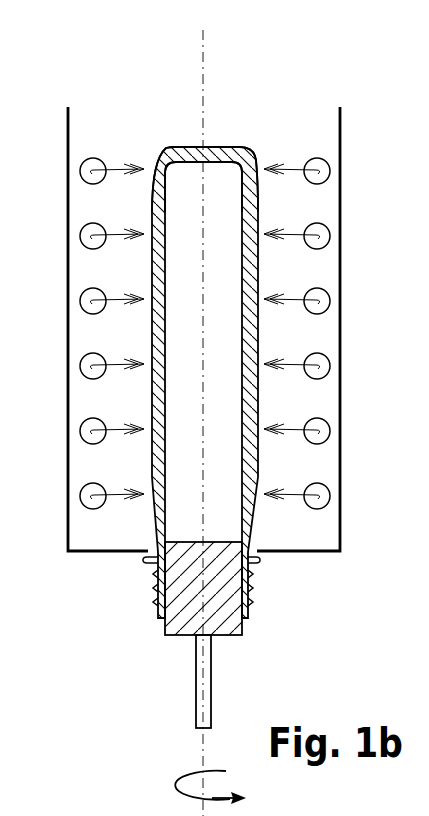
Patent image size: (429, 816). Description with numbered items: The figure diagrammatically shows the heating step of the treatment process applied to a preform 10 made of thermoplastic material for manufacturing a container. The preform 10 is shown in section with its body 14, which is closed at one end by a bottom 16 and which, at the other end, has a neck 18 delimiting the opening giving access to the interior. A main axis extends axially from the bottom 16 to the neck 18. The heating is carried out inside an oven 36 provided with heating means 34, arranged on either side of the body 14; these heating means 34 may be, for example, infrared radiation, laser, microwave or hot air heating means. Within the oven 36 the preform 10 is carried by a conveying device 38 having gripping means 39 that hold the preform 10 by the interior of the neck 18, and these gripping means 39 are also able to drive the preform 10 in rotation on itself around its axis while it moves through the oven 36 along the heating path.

The preform 10 is at (164, 139).
The body 14 is at (157, 329).
The bottom 16 is at (241, 147).
The neck 18 is at (248, 578).
The heating means 34 is at (317, 362).
The oven 36 is at (224, 100).
The conveying device 38 is at (162, 635).
The gripping means 39 is at (192, 593).